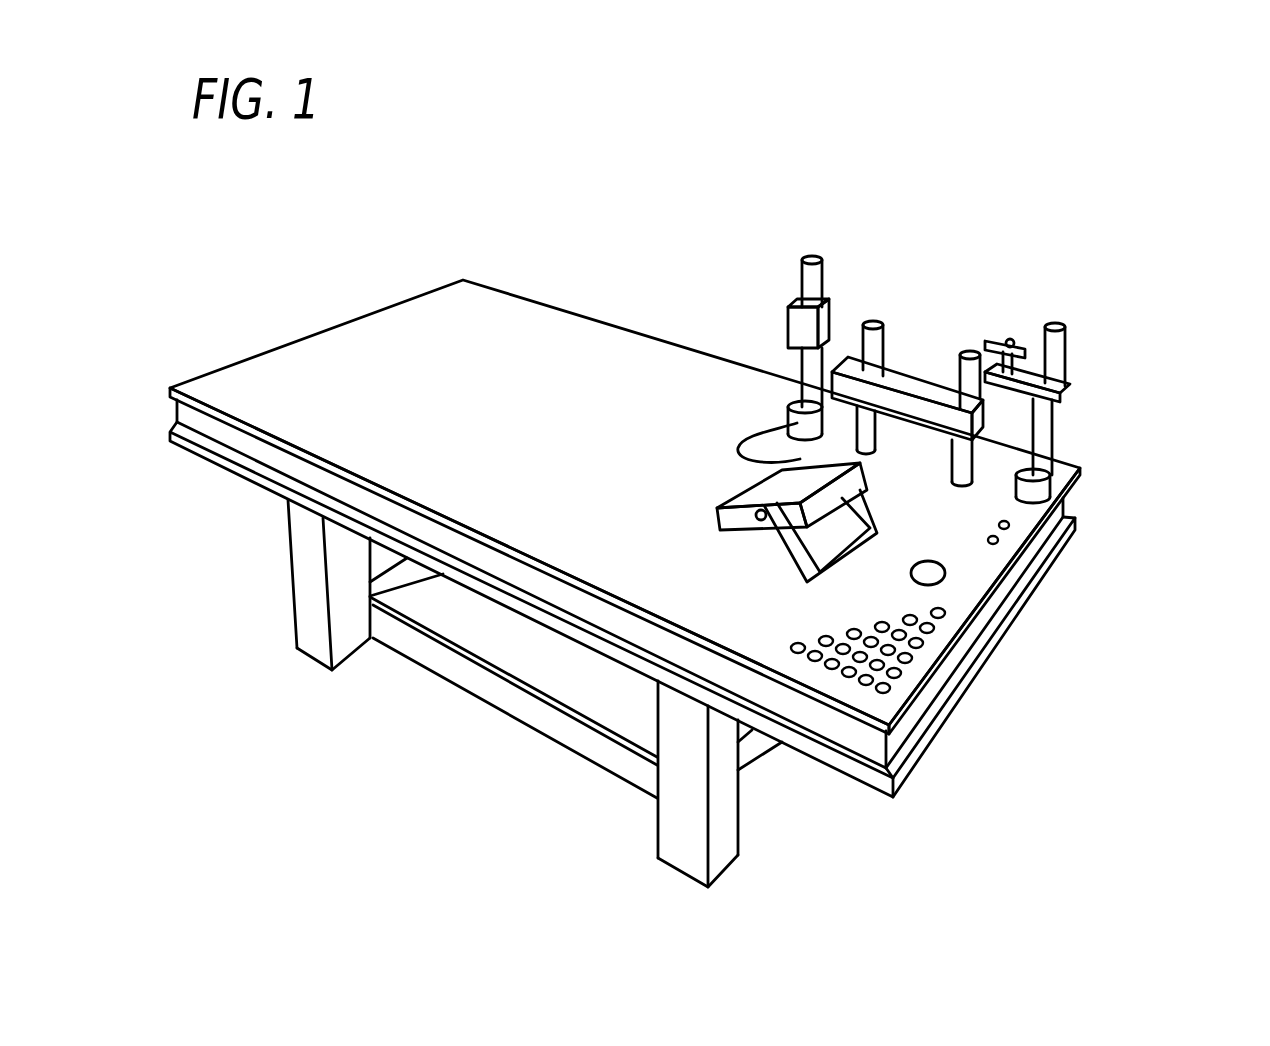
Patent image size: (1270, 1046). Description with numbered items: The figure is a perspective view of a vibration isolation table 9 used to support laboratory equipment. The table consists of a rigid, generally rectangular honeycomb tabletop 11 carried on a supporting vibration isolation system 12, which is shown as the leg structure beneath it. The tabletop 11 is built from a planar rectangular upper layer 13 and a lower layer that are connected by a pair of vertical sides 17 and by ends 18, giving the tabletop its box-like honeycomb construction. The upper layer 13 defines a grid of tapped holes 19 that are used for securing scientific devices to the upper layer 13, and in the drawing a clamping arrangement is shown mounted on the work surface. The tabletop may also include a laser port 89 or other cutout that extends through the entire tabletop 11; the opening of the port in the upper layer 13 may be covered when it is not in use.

The vibration isolation table 9 is at (966, 297).
The honeycomb tabletop 11 is at (674, 566).
The vibration isolation system 12 is at (312, 583).
The upper layer 13 is at (443, 307).
The vertical sides 17 is at (225, 435).
The ends 18 is at (1042, 613).
The tapped holes 19 is at (886, 690).
The laser port 89 is at (932, 565).